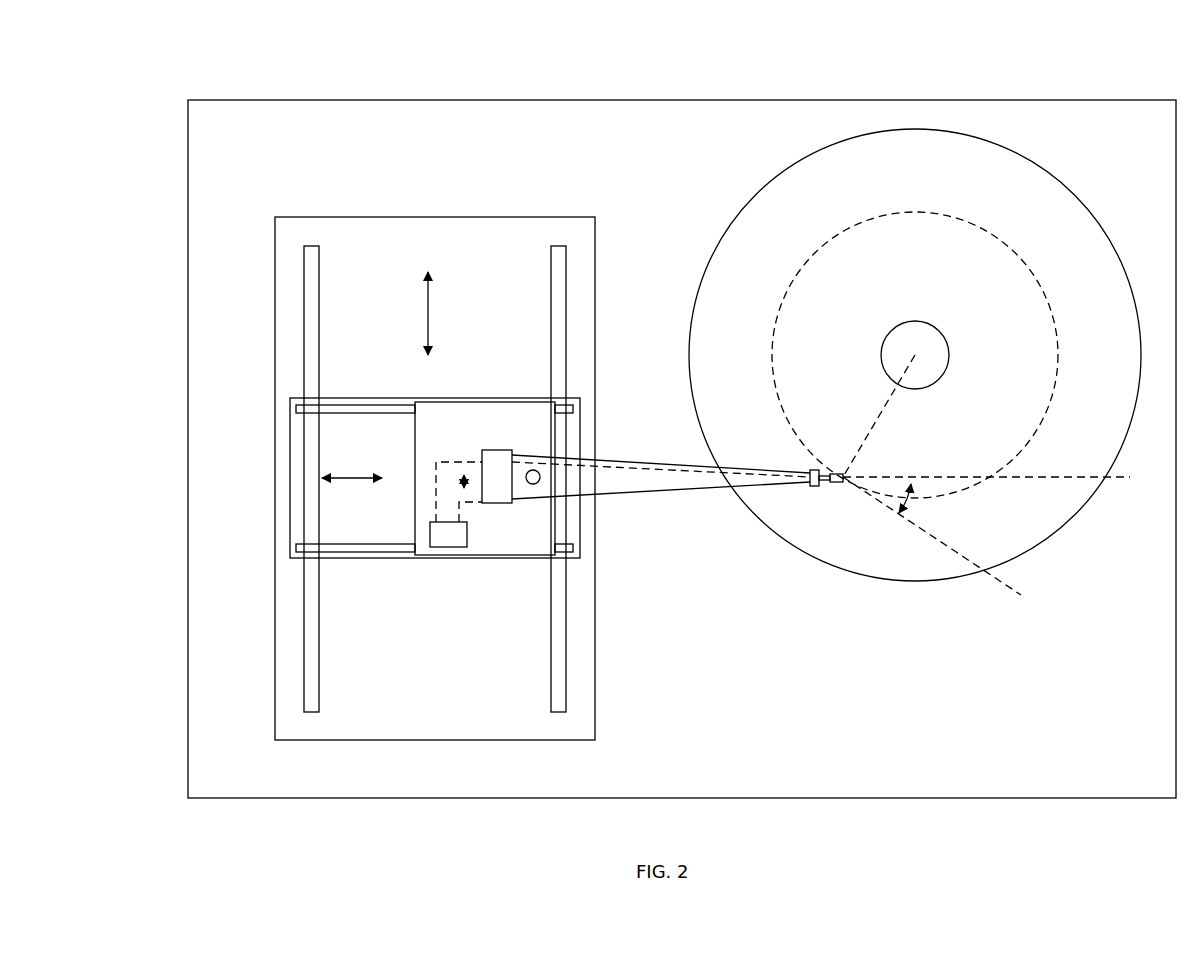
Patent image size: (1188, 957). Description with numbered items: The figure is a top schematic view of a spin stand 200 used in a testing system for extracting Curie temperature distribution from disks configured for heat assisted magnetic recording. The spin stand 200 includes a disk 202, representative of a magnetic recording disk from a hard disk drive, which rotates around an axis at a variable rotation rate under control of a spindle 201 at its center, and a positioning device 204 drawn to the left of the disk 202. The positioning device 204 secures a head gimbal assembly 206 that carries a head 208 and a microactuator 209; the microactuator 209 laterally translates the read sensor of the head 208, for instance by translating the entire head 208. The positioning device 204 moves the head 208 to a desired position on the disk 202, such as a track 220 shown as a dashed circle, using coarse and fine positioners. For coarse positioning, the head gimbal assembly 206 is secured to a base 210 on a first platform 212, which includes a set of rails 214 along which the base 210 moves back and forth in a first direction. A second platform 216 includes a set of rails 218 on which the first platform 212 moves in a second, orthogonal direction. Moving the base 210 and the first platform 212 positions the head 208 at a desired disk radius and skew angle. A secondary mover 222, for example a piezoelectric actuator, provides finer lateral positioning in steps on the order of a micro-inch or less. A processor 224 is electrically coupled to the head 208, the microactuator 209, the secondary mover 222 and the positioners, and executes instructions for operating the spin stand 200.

The spin stand 200 is at (223, 85).
The spindle 201 is at (918, 322).
The disk 202 is at (991, 150).
The positioning device 204 is at (505, 783).
The head gimbal assembly 206 is at (673, 487).
The head 208 is at (833, 487).
The microactuator 209 is at (813, 488).
The base 210 is at (527, 550).
The first platform 212 is at (300, 452).
The rails 214 is at (300, 409).
The second platform 216 is at (373, 238).
The rails 218 is at (307, 257).
The track 220 is at (978, 225).
The secondary mover 222 is at (497, 503).
The processor 224 is at (437, 550).